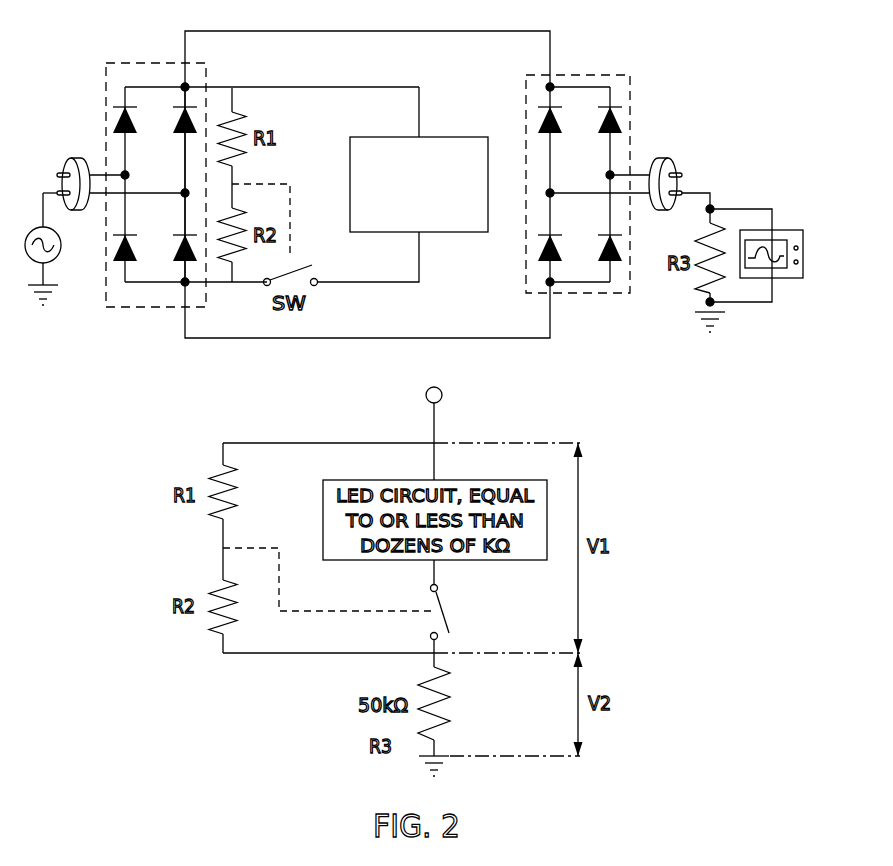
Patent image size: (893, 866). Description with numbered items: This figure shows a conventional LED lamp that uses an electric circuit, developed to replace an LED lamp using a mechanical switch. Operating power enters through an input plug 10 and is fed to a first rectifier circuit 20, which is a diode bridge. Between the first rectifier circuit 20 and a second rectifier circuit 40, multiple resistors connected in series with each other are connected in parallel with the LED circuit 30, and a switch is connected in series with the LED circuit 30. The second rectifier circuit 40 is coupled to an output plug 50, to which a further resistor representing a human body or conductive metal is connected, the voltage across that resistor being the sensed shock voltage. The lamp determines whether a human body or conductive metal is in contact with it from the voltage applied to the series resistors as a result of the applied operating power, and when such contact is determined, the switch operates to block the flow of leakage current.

The input plug 10 is at (73, 157).
The first bridge rectifier 20 is at (137, 62).
The LED circuit 30 is at (463, 136).
The second bridge rectifier 40 is at (593, 73).
The output plug 50 is at (662, 157).